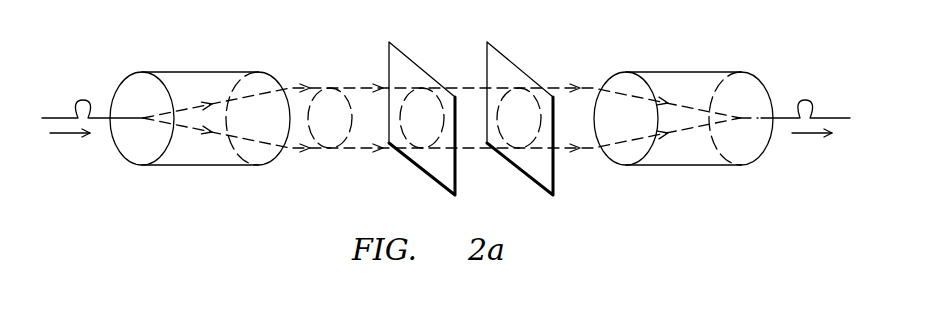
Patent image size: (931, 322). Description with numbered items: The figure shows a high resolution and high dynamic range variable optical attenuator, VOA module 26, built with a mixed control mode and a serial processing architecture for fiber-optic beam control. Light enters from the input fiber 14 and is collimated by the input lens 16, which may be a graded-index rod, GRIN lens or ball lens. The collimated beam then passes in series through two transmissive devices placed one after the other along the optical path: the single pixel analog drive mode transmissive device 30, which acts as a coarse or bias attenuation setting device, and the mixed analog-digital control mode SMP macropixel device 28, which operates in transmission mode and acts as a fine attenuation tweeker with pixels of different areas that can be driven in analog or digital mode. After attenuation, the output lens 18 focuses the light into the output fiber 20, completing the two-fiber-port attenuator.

The input fiber 14 is at (55, 118).
The input lens 16 is at (197, 72).
The VOA module 26 is at (737, 217).
The single pixel analog drive mode transmissive device 30 is at (405, 55).
The mixed analog-digital control mode SMP macropixel device 28 is at (503, 55).
The output lens 18 is at (680, 72).
The output fiber 20 is at (833, 118).